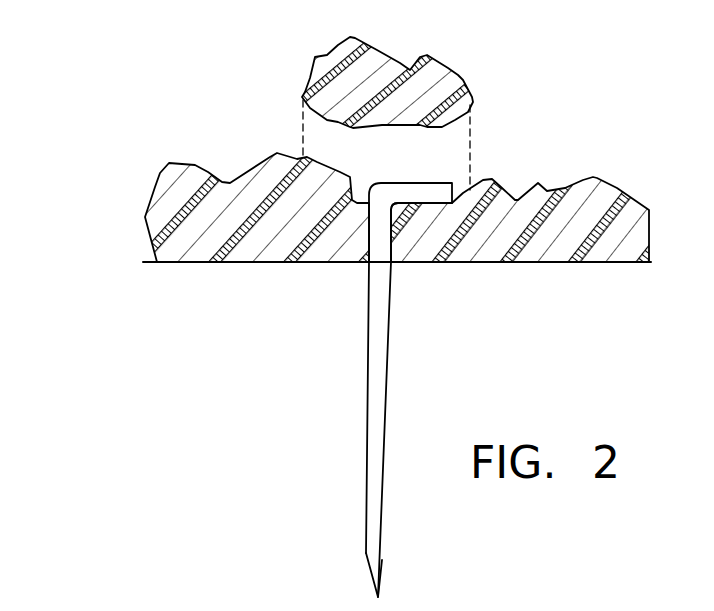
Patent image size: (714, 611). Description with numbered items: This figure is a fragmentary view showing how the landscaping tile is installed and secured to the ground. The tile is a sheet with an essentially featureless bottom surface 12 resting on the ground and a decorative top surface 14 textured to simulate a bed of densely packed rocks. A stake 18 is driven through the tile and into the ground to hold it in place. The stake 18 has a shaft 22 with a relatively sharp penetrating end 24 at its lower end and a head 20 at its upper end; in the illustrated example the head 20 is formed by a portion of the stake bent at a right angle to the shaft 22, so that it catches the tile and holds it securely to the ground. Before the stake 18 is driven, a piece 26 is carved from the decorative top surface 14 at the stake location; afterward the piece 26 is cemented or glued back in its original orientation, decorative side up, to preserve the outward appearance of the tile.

The bottom surface 12 is at (238, 263).
The decorative top surface 14 is at (252, 168).
The stake 18 is at (398, 340).
The head 20 is at (423, 183).
The shaft 22 is at (368, 350).
The penetrating end 24 is at (380, 596).
The piece 26 is at (432, 70).